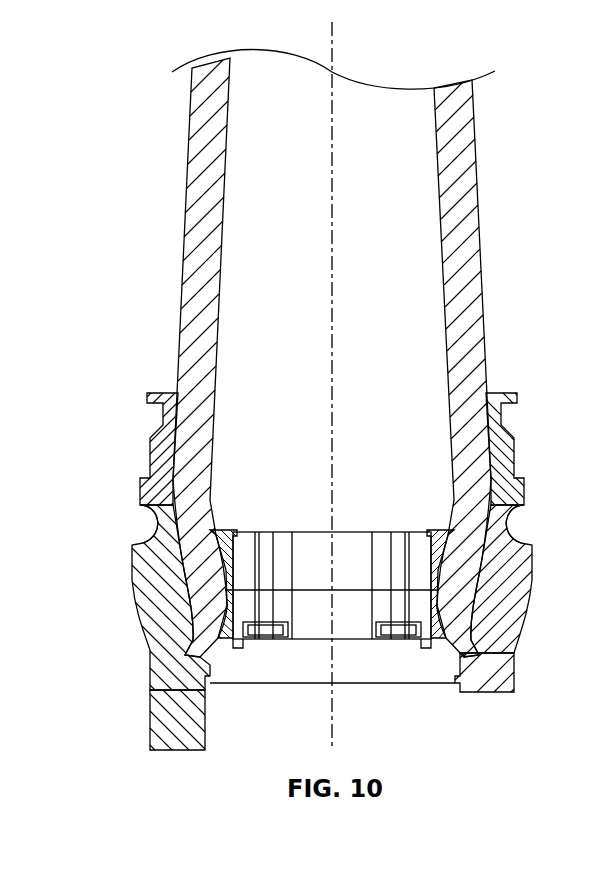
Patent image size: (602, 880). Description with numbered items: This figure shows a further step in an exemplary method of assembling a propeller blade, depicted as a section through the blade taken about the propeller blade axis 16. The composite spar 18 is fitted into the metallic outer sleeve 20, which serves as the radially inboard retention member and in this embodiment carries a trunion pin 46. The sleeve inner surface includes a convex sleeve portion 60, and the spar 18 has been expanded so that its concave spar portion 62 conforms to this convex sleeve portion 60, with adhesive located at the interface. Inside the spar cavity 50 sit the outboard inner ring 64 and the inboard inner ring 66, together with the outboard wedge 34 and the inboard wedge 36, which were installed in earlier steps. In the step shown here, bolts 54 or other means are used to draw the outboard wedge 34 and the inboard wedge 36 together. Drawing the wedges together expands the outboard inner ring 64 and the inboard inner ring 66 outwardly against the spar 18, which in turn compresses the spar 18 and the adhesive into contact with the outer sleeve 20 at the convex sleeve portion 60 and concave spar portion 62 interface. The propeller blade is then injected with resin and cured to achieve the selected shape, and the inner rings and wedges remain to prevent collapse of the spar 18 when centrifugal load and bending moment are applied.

The propeller blade axis 16 is at (336, 52).
The spar 18 is at (480, 182).
The outer sleeve 20 is at (150, 440).
The outboard wedge 34 is at (350, 532).
The inboard wedge 36 is at (352, 639).
The trunion pin 46 is at (150, 728).
The spar cavity 50 is at (291, 277).
The bolts 54 is at (262, 639).
The convex sleeve portion 60 is at (523, 607).
The concave spar portion 62 is at (467, 592).
The outboard inner ring 64 is at (142, 504).
The inboard inner ring 66 is at (515, 666).